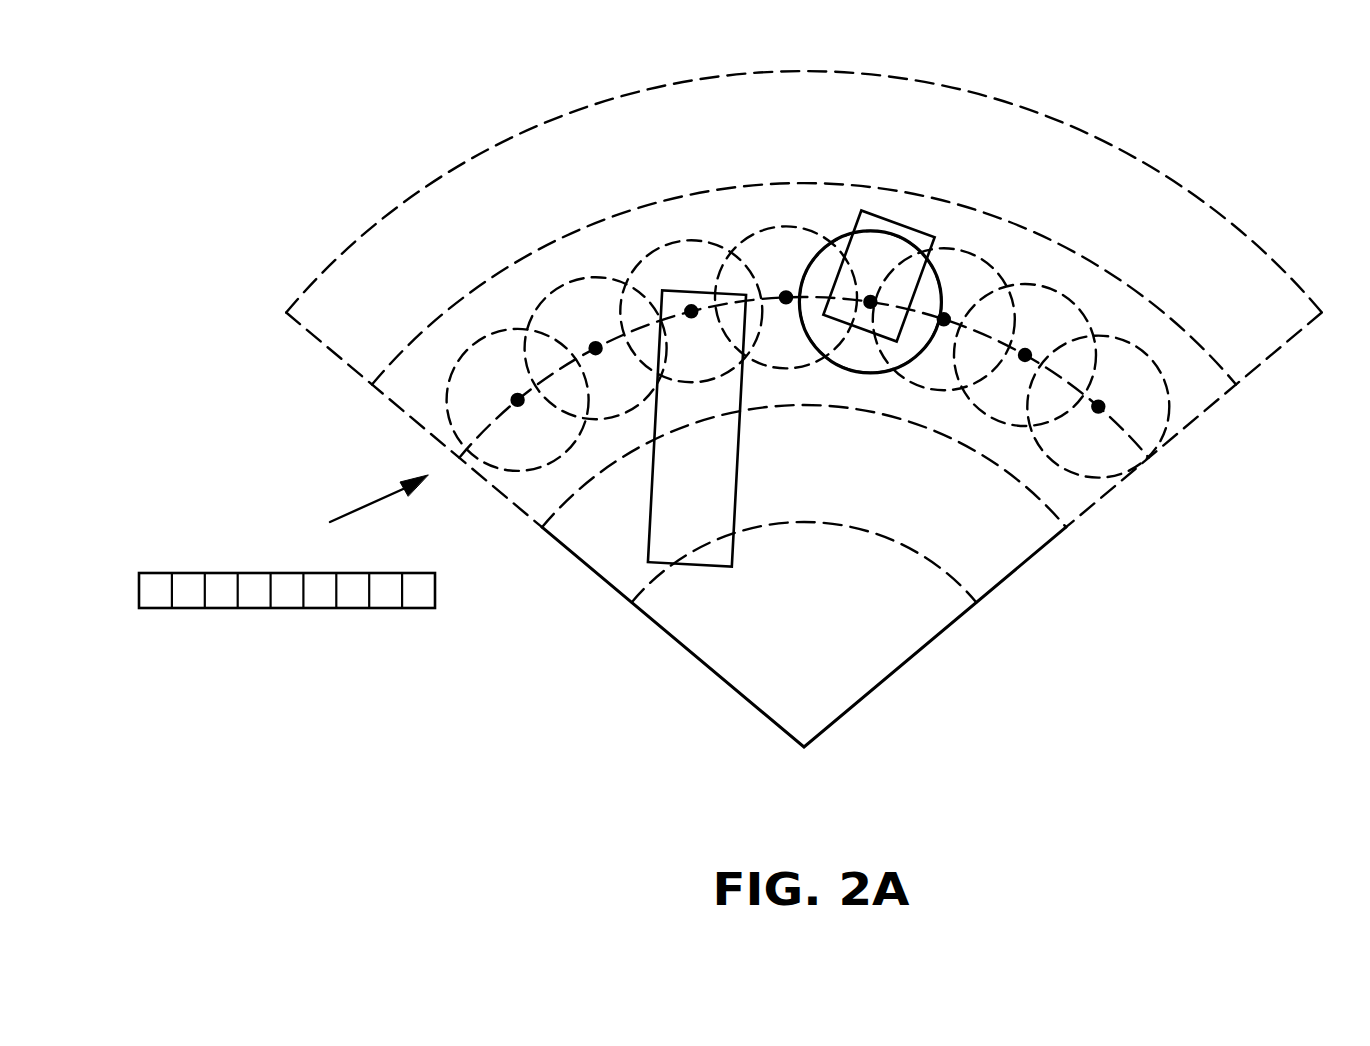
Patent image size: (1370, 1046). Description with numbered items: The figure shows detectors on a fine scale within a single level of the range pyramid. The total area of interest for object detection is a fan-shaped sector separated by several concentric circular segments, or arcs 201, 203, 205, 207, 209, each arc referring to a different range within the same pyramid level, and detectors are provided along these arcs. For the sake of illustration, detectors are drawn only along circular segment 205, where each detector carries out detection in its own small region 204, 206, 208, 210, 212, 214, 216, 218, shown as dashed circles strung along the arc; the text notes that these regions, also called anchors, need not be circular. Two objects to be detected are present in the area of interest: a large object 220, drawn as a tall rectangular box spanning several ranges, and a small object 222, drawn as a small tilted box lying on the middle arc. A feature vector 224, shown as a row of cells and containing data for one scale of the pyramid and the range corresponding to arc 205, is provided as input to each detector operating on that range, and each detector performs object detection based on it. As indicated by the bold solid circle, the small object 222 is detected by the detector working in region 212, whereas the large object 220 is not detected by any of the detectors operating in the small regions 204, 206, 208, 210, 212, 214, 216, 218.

The circular segment 201 is at (940, 570).
The circular segment 203 is at (1033, 497).
The circular segment 205 is at (1125, 435).
The circular segment 207 is at (1201, 355).
The circular segment 209 is at (1288, 274).
The region 204 is at (474, 341).
The region 206 is at (571, 279).
The region 208 is at (648, 252).
The region 210 is at (766, 230).
The region 212 is at (847, 369).
The region 214 is at (983, 260).
The region 216 is at (1066, 296).
The region 218 is at (1139, 347).
The large object 220 is at (648, 530).
The small object 222 is at (915, 232).
The feature vector 224 is at (139, 593).